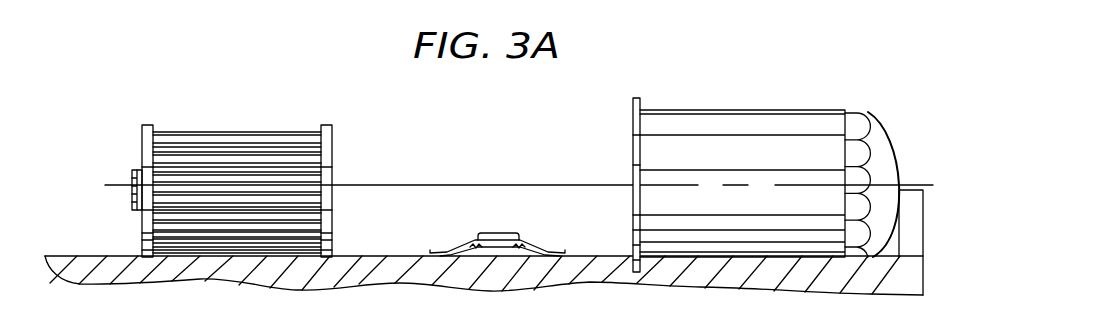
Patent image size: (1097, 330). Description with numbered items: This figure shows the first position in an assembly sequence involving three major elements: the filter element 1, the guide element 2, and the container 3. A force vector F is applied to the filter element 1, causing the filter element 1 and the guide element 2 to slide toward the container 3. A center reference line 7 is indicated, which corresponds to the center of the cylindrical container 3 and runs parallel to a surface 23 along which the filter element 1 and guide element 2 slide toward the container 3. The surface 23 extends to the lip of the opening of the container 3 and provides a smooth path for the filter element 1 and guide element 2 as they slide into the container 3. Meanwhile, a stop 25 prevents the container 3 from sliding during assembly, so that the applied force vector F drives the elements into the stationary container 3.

The filter element 1 is at (238, 130).
The guide element 2 is at (527, 240).
The container 3 is at (772, 110).
The center reference line 7 is at (884, 178).
The surface 23 is at (382, 256).
The stop 25 is at (915, 188).
The force vector F is at (132, 141).